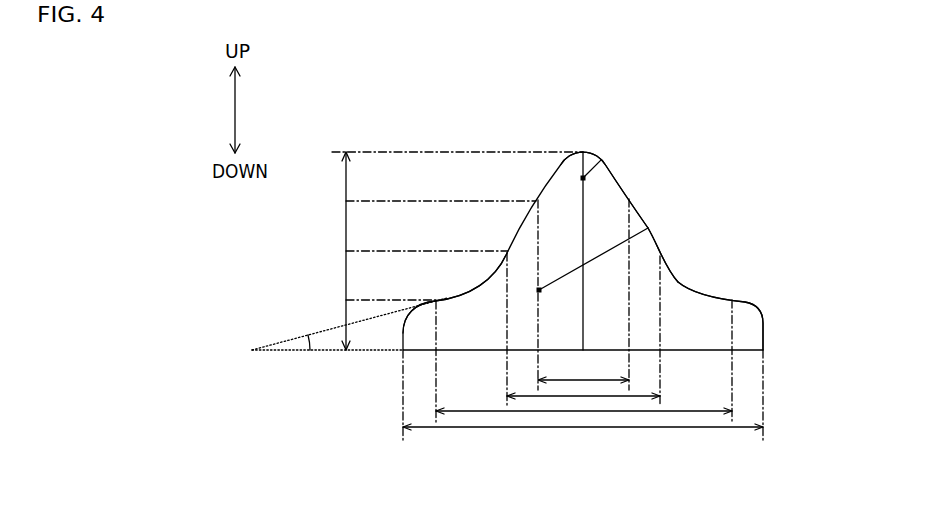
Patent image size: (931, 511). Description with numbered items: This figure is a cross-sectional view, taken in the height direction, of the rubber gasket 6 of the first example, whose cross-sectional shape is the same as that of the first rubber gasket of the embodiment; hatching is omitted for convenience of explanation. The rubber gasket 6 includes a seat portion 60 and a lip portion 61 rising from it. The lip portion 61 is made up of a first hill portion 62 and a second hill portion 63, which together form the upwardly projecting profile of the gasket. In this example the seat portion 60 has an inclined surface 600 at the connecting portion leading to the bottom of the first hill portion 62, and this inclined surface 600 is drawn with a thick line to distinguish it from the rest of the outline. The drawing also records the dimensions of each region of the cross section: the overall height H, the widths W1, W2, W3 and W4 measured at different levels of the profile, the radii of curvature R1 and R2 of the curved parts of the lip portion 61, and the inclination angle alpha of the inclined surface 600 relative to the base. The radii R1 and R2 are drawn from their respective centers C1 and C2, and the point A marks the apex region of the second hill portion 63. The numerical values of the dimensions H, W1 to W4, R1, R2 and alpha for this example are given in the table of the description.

The rubber gasket 6 is at (704, 111).
The seat portion 60 is at (748, 317).
The inclined surface 600 is at (455, 296).
The lip portion 61 is at (622, 207).
The first hill portion 62 is at (643, 243).
The second hill portion 63 is at (606, 167).
The tip point A is at (576, 163).
The radius R1 is at (592, 260).
The radius R2 is at (587, 152).
The center of curvature C1 is at (539, 290).
The center of curvature C2 is at (583, 178).
The height H is at (346, 233).
The width W1 is at (582, 427).
The width W2 is at (673, 411).
The width W3 is at (523, 396).
The width W4 is at (603, 380).
The angle α alpha is at (314, 338).